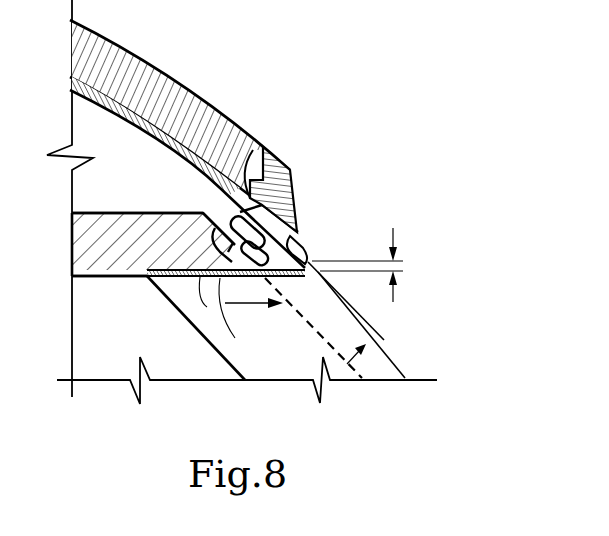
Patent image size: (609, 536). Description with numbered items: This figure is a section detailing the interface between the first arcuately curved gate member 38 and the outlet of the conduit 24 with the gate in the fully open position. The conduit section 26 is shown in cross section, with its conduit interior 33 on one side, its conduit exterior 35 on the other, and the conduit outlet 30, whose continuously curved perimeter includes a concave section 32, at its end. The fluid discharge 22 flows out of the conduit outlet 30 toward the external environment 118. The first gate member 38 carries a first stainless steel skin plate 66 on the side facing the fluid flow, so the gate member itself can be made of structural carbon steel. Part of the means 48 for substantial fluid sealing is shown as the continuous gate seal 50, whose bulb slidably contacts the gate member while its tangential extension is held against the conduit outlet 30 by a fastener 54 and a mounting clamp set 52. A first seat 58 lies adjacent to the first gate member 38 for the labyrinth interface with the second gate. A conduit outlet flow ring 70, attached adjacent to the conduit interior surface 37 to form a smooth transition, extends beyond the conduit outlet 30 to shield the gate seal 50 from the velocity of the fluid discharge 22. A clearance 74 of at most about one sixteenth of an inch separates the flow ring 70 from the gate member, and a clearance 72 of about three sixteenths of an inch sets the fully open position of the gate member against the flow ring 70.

The fluid discharge 22 is at (245, 307).
The conduit 24 is at (341, 329).
The conduit section 26 is at (72, 250).
The conduit outlet 30 is at (235, 338).
The concave section 32 is at (213, 222).
The conduit interior 33 is at (110, 355).
The conduit exterior 35 is at (97, 214).
The conduit interior surface 37 is at (88, 278).
The first arcuately curved gate member 38 is at (172, 72).
The means for substantial fluid sealing 48 is at (334, 292).
The gate seal 50 is at (180, 308).
The mounting clamp set 52 is at (230, 123).
The fastener 54 is at (257, 162).
The first seat 58 is at (291, 172).
The first stainless steel skin plate 66 is at (100, 104).
The conduit outlet flow ring 70 is at (172, 280).
The clearance 72 is at (361, 251).
The clearance 74 is at (384, 319).
The external environment 118 is at (422, 178).